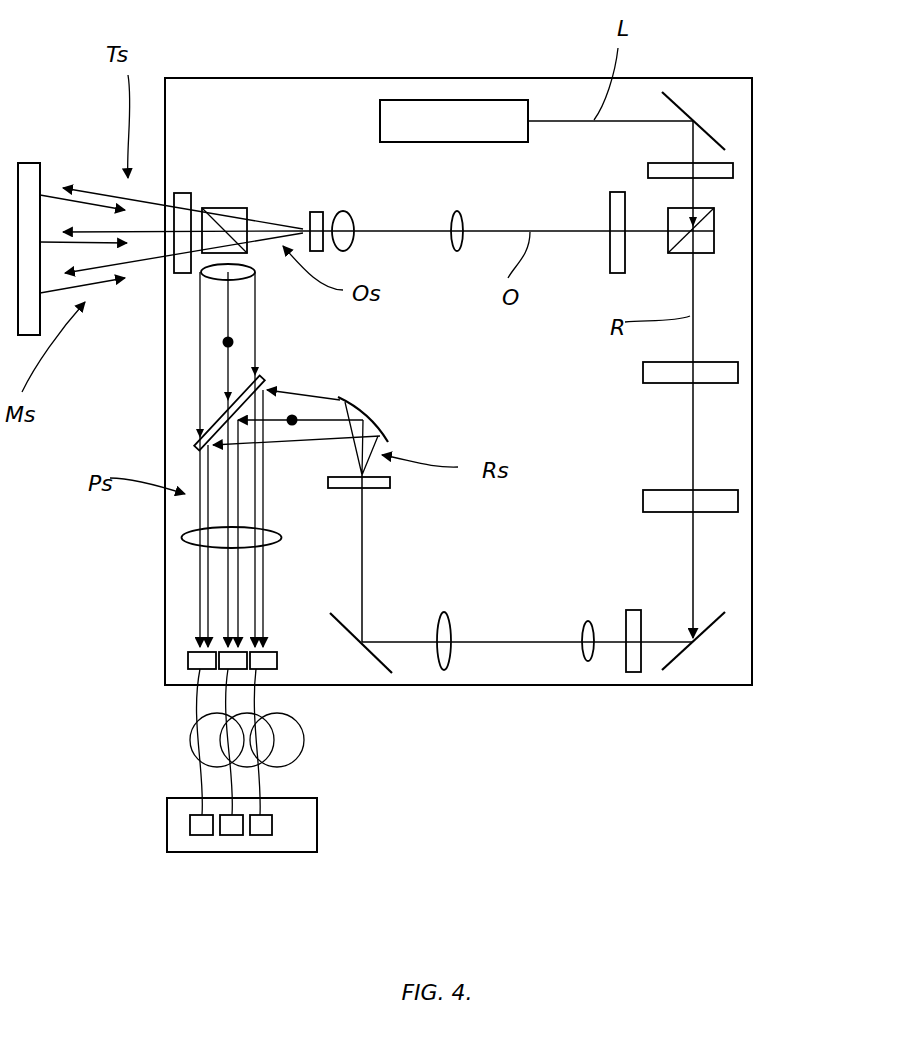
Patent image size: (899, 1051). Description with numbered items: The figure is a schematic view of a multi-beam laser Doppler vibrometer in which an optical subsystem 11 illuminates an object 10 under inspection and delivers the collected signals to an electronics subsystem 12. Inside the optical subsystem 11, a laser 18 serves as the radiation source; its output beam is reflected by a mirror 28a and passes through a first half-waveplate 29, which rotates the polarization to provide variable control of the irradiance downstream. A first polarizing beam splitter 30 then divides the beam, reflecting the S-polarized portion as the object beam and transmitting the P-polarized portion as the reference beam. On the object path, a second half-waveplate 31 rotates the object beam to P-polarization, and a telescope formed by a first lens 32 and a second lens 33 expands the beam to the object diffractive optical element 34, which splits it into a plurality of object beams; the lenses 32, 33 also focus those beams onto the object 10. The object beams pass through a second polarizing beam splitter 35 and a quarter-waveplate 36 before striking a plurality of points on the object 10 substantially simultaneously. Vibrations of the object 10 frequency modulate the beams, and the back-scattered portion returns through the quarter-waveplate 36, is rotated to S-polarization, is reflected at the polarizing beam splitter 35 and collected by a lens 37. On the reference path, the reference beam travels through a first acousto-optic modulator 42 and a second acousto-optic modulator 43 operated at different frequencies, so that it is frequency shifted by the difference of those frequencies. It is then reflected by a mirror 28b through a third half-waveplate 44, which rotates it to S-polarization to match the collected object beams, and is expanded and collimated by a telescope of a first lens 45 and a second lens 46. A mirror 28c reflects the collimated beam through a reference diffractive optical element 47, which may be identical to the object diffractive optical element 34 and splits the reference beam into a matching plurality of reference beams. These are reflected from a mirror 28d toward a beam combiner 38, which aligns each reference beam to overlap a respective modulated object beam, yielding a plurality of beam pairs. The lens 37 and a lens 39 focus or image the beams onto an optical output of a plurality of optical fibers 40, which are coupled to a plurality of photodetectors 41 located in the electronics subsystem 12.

The object 10 is at (30, 163).
The optical subsystem 11 is at (725, 685).
The electronics subsystem 12 is at (317, 826).
The laser 18 is at (460, 100).
The mirror 28a is at (703, 125).
The mirror 28b is at (720, 620).
The mirror 28c is at (378, 665).
The mirror 28d is at (366, 424).
The first half-waveplate 29 is at (733, 170).
The first polarizing beam splitter 30 is at (714, 231).
The second half-waveplate 31 is at (613, 246).
The first lens 32 is at (461, 216).
The second lens 33 is at (353, 221).
The object diffractive optical element 34 is at (313, 212).
The second polarizing beam splitter 35 is at (232, 208).
The quarter-waveplate 36 is at (181, 193).
The lens 37 is at (254, 273).
The beam combiner 38 is at (195, 450).
The lens 39 is at (203, 273).
The optical fibers 40 is at (178, 658).
The photodetectors 41 is at (178, 826).
The first acousto-optic modulator 42 is at (738, 372).
The second acousto-optic modulator 43 is at (738, 500).
The third half-waveplate 44 is at (630, 672).
The first lens 45 is at (585, 665).
The second lens 46 is at (443, 670).
The reference diffractive optical element 47 is at (392, 484).